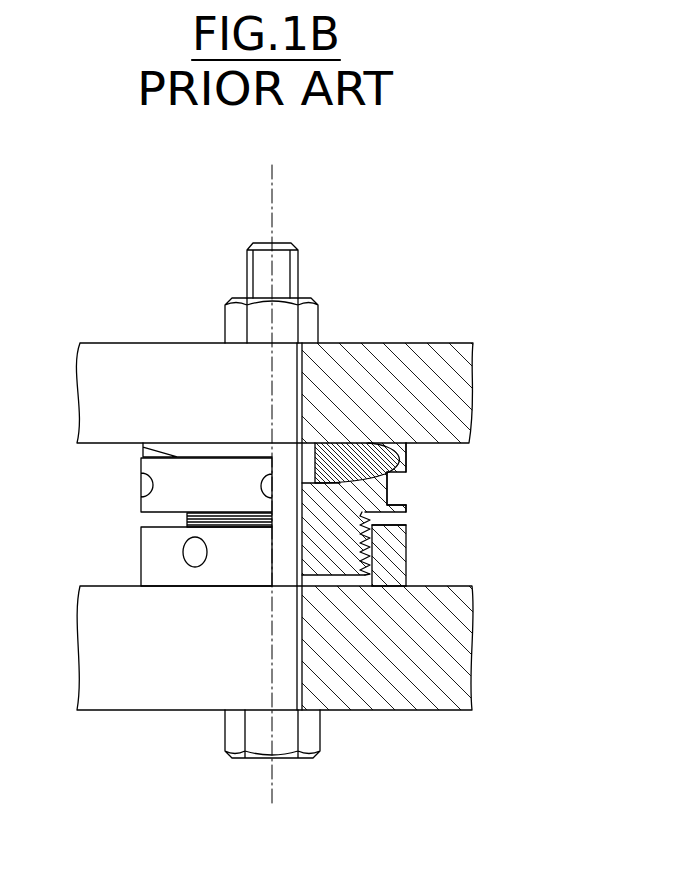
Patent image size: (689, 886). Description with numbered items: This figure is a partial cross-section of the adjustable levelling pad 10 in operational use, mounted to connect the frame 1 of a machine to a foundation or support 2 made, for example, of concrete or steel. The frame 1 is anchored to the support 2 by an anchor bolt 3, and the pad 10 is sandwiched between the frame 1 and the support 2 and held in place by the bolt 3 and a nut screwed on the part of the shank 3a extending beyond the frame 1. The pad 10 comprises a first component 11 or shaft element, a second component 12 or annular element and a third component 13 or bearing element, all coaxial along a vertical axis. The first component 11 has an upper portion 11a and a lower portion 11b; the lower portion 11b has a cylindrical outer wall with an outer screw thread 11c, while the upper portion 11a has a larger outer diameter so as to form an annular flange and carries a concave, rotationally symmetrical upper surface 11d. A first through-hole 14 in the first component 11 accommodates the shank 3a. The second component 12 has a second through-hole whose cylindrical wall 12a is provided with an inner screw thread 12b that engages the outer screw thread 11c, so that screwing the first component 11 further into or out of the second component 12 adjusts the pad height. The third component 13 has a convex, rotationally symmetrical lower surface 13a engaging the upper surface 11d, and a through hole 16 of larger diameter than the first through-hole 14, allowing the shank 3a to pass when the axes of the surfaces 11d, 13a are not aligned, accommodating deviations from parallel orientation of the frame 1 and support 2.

The frame 1 is at (103, 343).
The support 2 is at (102, 710).
The anchor bolt 3 is at (247, 760).
The shank 3a is at (262, 243).
The adjustable levelling pad 10 is at (470, 565).
The first component 11 is at (141, 502).
The upper portion 11a is at (412, 472).
The lower portion 11b is at (368, 518).
The outer screw thread 11c is at (187, 518).
The upper surface 11d is at (412, 443).
The second component 12 is at (141, 564).
The cylindrical wall 12a is at (362, 604).
The inner screw thread 12b is at (362, 604).
The third component 13 is at (406, 449).
The lower surface 13a is at (410, 505).
The first through-hole 14 is at (293, 570).
The through hole 16 is at (315, 466).